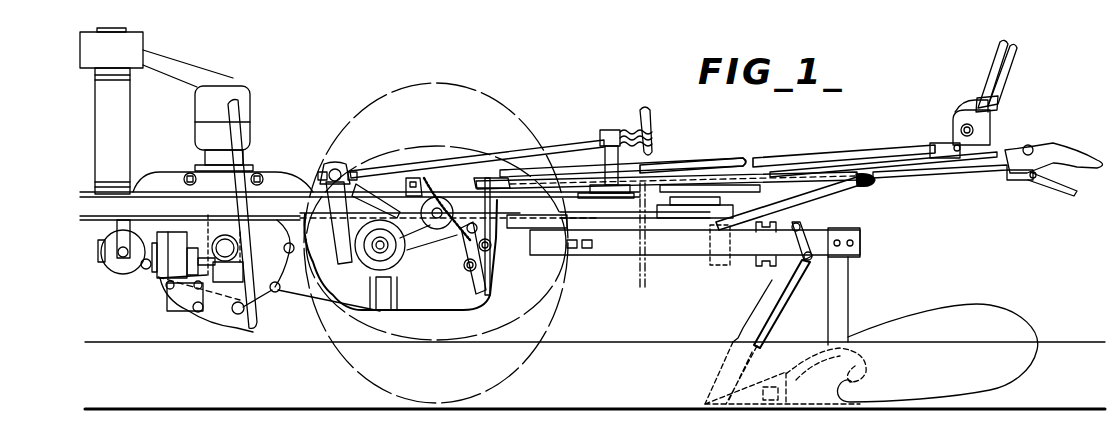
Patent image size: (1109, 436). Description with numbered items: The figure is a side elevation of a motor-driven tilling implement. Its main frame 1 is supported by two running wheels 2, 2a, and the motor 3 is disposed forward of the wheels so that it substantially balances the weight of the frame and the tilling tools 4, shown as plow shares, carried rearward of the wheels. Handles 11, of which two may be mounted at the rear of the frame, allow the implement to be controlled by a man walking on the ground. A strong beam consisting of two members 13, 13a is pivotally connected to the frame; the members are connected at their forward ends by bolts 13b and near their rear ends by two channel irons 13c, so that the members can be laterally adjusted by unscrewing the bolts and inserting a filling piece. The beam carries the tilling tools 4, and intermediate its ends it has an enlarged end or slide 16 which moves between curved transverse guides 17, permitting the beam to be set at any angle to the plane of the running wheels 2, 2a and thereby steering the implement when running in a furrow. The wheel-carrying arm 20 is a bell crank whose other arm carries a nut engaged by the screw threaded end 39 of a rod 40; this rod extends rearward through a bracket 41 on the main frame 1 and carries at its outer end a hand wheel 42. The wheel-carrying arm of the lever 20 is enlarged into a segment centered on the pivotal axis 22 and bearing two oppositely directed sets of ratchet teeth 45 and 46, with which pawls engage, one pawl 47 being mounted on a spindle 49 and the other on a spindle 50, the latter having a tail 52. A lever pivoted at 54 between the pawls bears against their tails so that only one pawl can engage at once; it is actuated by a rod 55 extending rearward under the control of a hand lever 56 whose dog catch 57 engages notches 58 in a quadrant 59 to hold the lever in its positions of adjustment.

The main frame 1 is at (143, 193).
The running wheel 2 is at (507, 372).
The running wheel 2a is at (510, 318).
The motor 3 is at (250, 135).
The tilling tool 4 is at (832, 320).
The handle 11 is at (866, 186).
The beam member 13 is at (750, 253).
The beam member 13a is at (637, 272).
The bolts 13b is at (572, 250).
The channel irons 13c is at (771, 226).
The slide 16 is at (800, 203).
The curved transverse guides 17 is at (760, 163).
The bell crank arm 20 is at (428, 257).
The pivotal axis 22 is at (378, 252).
The screw threaded end 39 is at (341, 170).
The rod 40 is at (566, 141).
The bracket 41 is at (605, 157).
The hand wheel 42 is at (652, 122).
The ratchet teeth 45 is at (449, 198).
The ratchet teeth 46 is at (468, 236).
The pawl 47 is at (492, 245).
The spindle 49 is at (478, 226).
The spindle 50 is at (465, 268).
The pawl tail 52 is at (480, 286).
The pivot 54 is at (490, 250).
The rod 55 is at (729, 163).
The hand lever 56 is at (998, 102).
The dog catch 57 is at (976, 105).
The notches 58 is at (960, 112).
The quadrant 59 is at (953, 117).